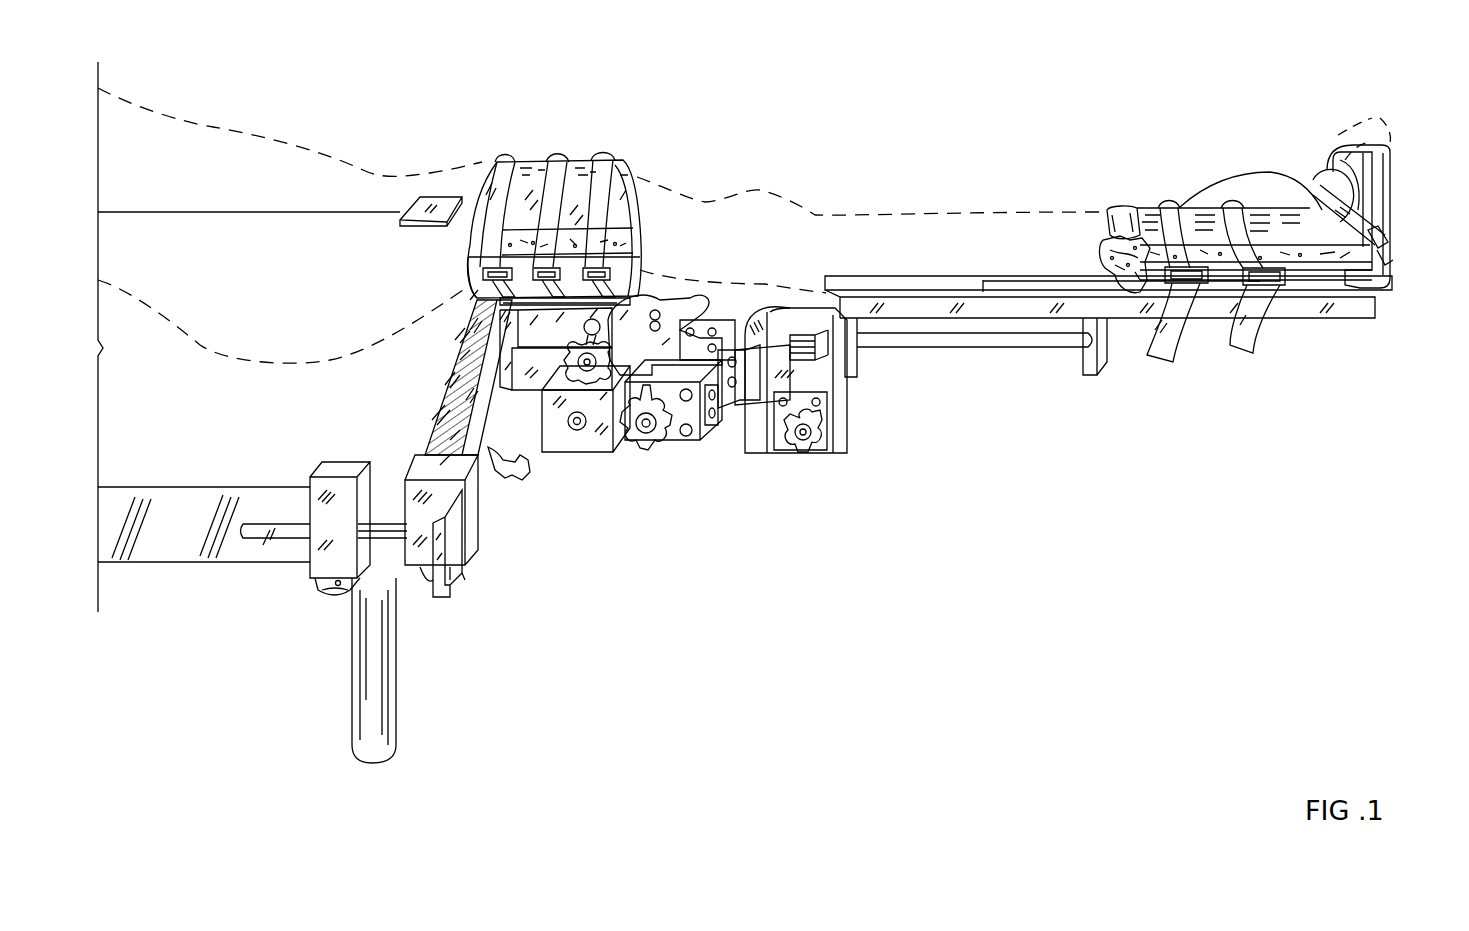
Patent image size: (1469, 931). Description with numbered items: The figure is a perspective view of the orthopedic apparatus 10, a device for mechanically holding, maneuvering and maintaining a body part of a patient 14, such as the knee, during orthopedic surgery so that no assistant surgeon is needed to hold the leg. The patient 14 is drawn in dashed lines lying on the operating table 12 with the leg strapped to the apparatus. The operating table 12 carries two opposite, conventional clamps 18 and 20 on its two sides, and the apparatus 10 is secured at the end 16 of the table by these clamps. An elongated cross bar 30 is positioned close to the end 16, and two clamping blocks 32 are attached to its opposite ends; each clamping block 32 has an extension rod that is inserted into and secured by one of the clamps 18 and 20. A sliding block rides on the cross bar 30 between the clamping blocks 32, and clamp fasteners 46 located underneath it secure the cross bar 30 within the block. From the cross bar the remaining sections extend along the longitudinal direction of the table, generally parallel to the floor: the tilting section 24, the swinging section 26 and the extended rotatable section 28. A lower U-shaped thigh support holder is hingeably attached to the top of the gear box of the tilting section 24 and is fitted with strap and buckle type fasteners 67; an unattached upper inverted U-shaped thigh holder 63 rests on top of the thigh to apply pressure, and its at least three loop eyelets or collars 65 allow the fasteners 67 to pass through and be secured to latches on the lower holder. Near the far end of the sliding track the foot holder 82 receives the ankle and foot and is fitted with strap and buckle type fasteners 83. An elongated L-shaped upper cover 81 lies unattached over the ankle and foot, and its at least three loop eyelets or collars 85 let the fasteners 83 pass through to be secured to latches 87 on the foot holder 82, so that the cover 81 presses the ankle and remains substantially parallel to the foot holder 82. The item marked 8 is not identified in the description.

The bracket 8 is at (699, 350).
The orthopedic apparatus 10 is at (835, 460).
The operating table 12 is at (215, 424).
The patient 14 is at (688, 186).
The end of the operating table 16 is at (438, 422).
The clamp 18 is at (312, 582).
The clamp 20 is at (438, 200).
The tilting section 24 is at (543, 440).
The swinging section 26 is at (702, 428).
The extended rotatable section 28 is at (838, 395).
The cross bar 30 is at (487, 478).
The clamping block 32 is at (418, 565).
The clamp fastener 46 is at (515, 470).
The upper inverted U-shaped thigh holder 63 is at (627, 157).
The loop eyelet 65 is at (548, 160).
The strap and buckle type fastener 67 is at (602, 160).
The upper cover 81 is at (1139, 208).
The foot holder 82 is at (1390, 173).
The strap and buckle type fastener 83 is at (1243, 352).
The loop eyelet 85 is at (1230, 205).
The latch 87 is at (1172, 285).